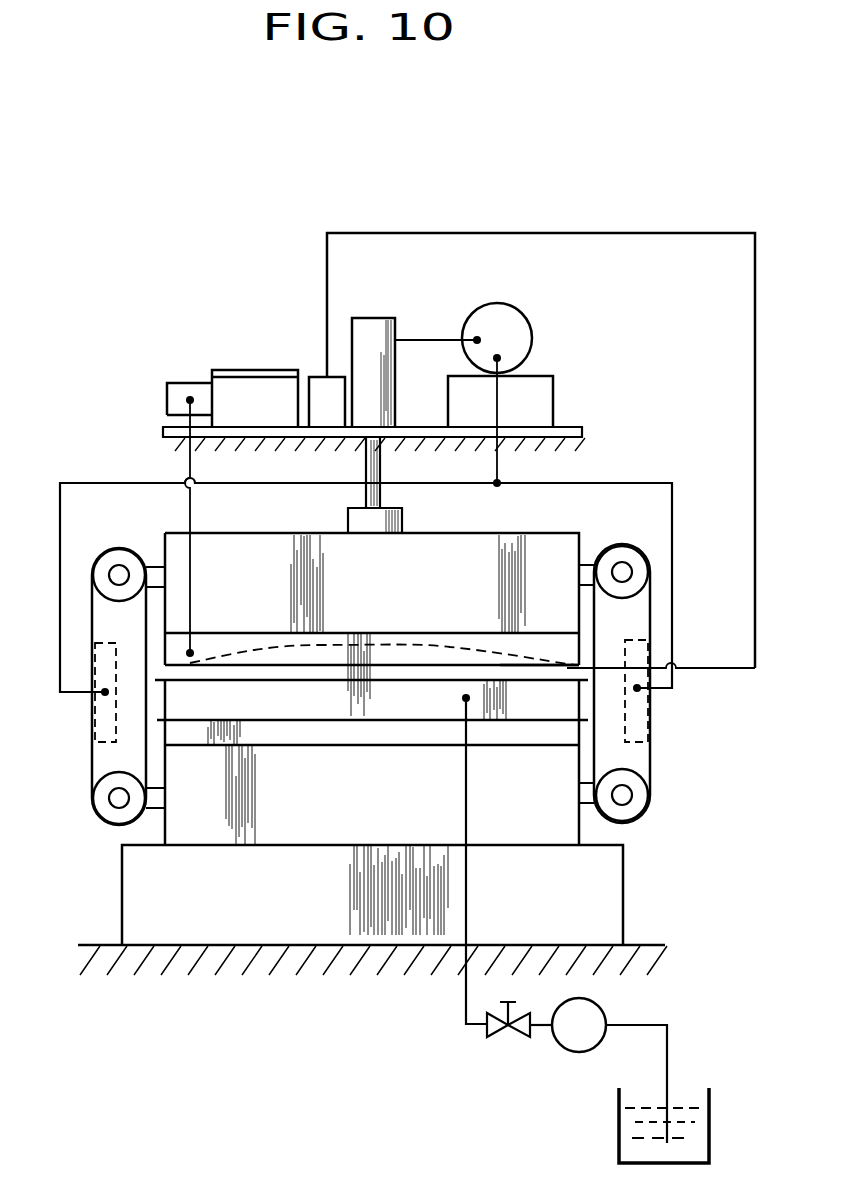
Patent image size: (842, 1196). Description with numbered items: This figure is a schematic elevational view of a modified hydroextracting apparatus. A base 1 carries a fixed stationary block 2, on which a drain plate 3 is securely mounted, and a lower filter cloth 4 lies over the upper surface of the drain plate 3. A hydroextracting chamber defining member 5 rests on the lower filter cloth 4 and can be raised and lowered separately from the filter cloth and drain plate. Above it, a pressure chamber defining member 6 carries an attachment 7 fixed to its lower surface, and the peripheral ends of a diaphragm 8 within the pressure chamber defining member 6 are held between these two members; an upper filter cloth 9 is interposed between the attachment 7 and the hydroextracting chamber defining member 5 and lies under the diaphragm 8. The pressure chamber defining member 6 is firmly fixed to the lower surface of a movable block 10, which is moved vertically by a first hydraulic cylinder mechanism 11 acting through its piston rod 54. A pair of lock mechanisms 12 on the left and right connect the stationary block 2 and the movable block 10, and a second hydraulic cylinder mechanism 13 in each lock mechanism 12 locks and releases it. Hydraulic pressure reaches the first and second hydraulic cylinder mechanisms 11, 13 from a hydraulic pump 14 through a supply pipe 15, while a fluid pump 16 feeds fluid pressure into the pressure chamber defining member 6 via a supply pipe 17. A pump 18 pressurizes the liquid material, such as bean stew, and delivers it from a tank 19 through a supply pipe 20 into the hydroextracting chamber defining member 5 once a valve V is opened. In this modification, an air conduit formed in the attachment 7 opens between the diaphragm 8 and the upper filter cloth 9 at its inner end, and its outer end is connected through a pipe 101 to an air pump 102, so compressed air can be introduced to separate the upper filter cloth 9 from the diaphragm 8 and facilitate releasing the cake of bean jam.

The base 1 is at (212, 907).
The stationary block 2 is at (282, 808).
The drain plate 3 is at (318, 735).
The lower filter cloth 4 is at (370, 721).
The hydroextracting chamber defining member 5 is at (407, 697).
The pressure chamber defining member 6 is at (537, 643).
The attachment 7 is at (290, 673).
The diaphragm 8 is at (422, 643).
The upper filter cloth 9 is at (563, 682).
The movable block 10 is at (477, 550).
The first hydraulic cylinder mechanism 11 is at (363, 327).
The lock mechanism 12 is at (87, 768).
The second hydraulic cylinder mechanism 13 is at (107, 730).
The hydraulic pump 14 is at (515, 327).
The supply pipe of the hydraulic pressure 15 is at (500, 397).
The fluid pump 16 is at (250, 380).
The supply pipe 17 is at (190, 515).
The pump 18 is at (575, 1037).
The tank 19 is at (708, 1107).
The supply pipe of the material to be processed 20 is at (463, 993).
The valve V is at (502, 1035).
The piston rod 54 is at (365, 497).
The pipe 101 is at (697, 230).
The air pump 102 is at (320, 383).